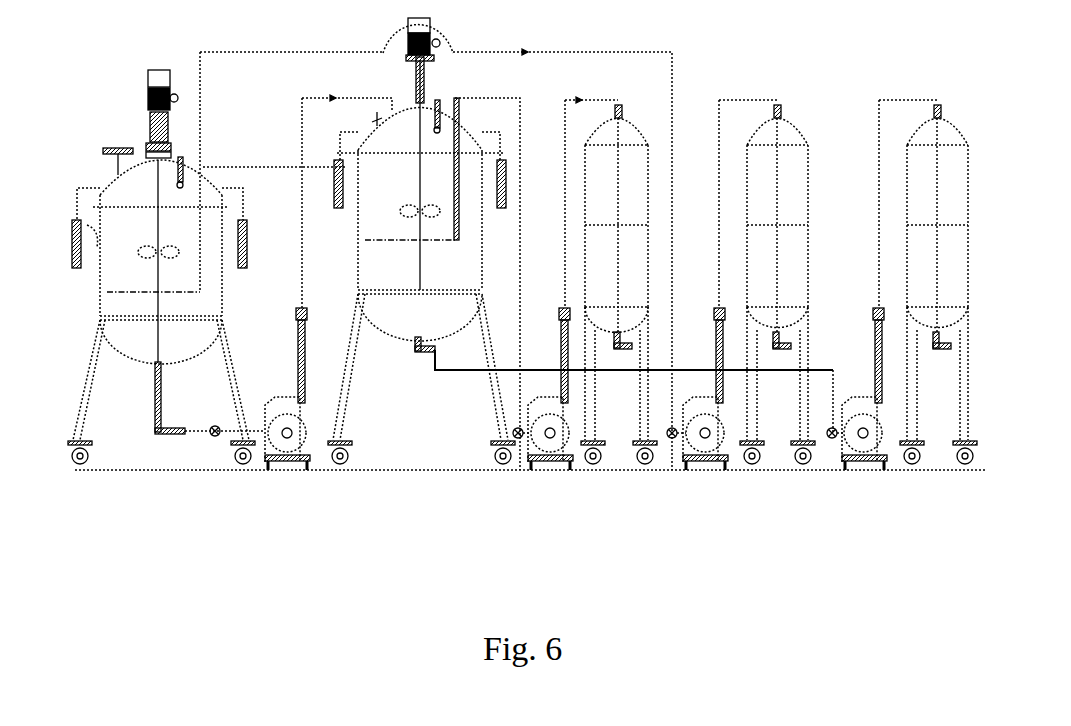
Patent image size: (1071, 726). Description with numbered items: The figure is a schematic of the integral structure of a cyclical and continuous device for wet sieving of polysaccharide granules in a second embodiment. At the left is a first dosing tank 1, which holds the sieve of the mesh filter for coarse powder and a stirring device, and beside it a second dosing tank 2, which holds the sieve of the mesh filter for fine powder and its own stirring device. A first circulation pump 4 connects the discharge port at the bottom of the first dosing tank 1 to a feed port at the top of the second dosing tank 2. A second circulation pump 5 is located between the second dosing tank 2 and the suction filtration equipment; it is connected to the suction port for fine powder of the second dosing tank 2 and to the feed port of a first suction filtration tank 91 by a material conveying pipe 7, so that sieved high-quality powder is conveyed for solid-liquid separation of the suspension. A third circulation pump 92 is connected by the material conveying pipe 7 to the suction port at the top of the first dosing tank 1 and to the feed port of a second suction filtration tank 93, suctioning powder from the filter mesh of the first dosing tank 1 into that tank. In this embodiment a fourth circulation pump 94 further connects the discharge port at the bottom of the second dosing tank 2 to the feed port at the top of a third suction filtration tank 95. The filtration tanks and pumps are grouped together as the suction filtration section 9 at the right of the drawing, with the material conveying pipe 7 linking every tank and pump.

The first dosing tank 1 is at (78, 490).
The second dosing tank 2 is at (337, 490).
The first circulation pump 4 is at (310, 490).
The second circulation pump 5 is at (527, 490).
The material conveying pipe 7 is at (203, 52).
The filtration unit 9 is at (625, 558).
The first suction filtration tank 91 is at (592, 490).
The third circulation pump 92 is at (682, 490).
The second suction filtration tank 93 is at (750, 490).
The fourth circulation pump 94 is at (838, 490).
The third suction filtration tank 95 is at (907, 490).